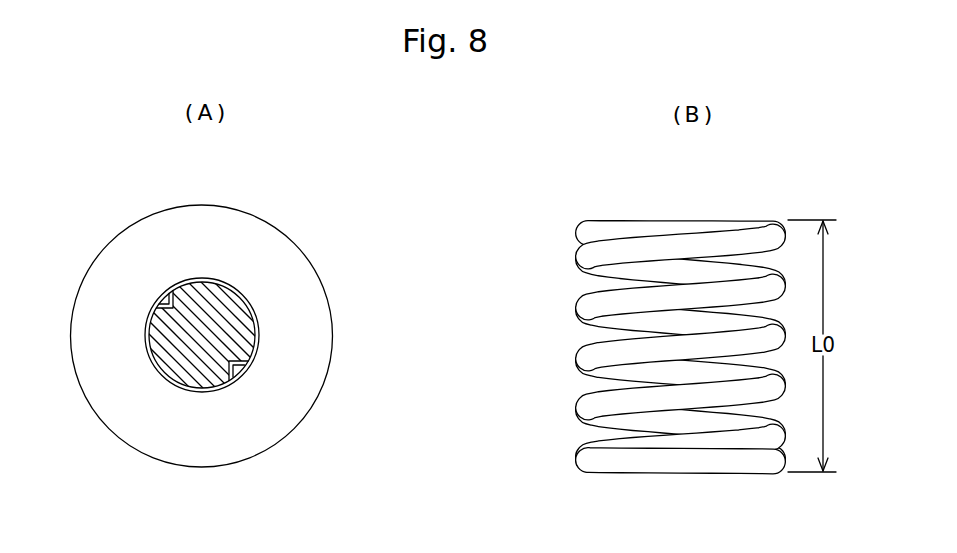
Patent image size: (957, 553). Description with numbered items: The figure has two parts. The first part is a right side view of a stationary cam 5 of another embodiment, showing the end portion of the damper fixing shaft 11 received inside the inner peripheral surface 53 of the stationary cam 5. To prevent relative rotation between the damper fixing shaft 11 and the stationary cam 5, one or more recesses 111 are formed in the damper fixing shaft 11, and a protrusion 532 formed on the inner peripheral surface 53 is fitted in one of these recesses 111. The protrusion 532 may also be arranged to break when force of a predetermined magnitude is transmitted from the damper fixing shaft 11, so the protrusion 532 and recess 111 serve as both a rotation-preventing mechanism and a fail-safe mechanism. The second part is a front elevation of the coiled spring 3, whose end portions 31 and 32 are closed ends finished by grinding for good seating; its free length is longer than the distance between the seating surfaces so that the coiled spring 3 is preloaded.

The coiled spring 3 is at (719, 322).
The end portion 31 is at (697, 221).
The end portion 32 is at (687, 474).
The stationary cam 5 is at (338, 201).
The inner peripheral surface 53 is at (247, 315).
The protrusion 532 is at (182, 280).
The damper fixing shaft 11 is at (177, 385).
The recess 111 is at (155, 305).